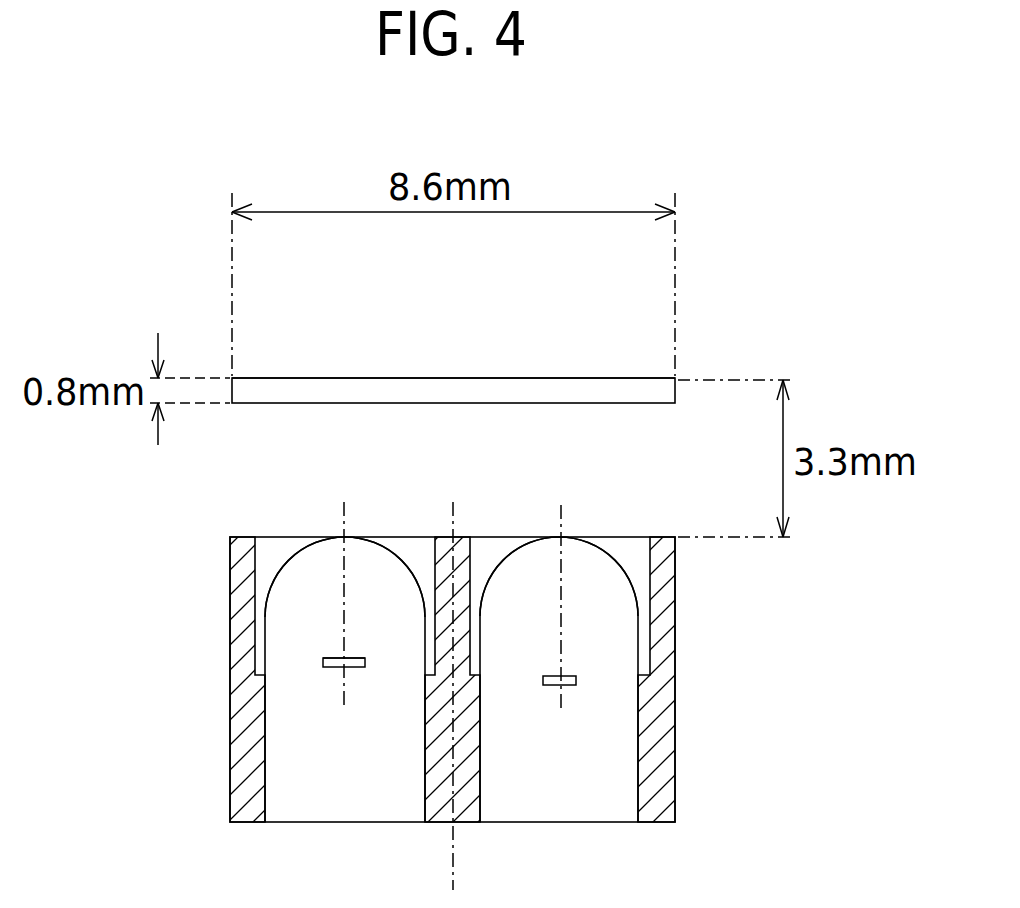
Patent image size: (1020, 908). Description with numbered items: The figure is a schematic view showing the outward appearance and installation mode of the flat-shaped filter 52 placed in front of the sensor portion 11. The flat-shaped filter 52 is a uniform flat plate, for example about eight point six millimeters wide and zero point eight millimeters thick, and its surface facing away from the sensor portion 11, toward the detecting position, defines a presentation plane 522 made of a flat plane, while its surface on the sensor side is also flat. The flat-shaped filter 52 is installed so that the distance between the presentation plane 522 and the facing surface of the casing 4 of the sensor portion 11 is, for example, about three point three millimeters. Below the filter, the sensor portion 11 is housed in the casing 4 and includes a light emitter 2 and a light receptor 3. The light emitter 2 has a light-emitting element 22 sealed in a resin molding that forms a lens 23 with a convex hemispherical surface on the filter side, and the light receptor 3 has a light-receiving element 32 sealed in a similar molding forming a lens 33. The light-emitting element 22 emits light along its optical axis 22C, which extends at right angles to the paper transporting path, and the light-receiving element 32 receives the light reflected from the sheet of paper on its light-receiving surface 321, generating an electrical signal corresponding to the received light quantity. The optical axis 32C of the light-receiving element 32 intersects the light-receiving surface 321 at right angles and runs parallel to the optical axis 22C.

The sensor portion 11 is at (698, 792).
The light emitter 2 is at (618, 562).
The light-emitting element 22 is at (557, 687).
The optical axis of the light-emitting element 22C is at (556, 693).
The lens 23 is at (497, 567).
The light receptor 3 is at (287, 560).
The light-receiving element 32 is at (344, 667).
The light-receiving surface 321 is at (328, 658).
The optical axis of the light-receiving element 32C is at (343, 693).
The lens 33 is at (300, 545).
The casing 4 is at (676, 695).
The flat-shaped filter 52 is at (678, 408).
The presentation plane 522 is at (521, 378).